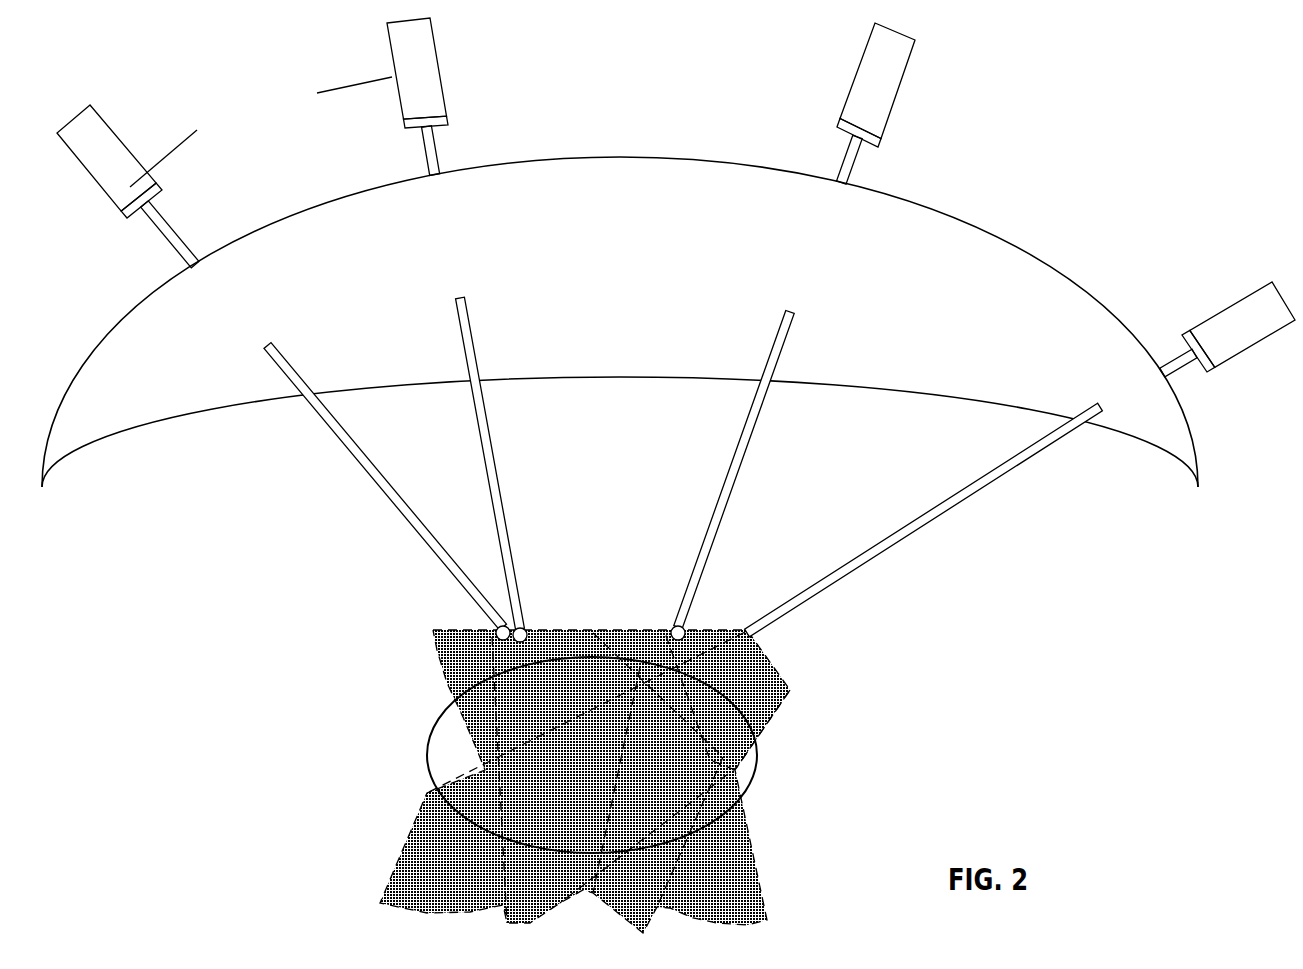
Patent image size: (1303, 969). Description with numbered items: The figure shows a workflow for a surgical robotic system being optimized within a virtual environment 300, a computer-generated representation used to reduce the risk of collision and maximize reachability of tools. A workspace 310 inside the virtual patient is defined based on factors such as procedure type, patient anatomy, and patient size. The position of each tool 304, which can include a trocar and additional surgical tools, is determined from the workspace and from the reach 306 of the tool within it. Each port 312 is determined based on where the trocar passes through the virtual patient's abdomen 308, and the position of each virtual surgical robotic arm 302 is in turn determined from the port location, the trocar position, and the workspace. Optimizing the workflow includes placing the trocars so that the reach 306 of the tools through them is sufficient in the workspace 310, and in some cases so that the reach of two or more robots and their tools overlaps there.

The virtual environment 300 is at (1119, 127).
The virtual surgical robotic arm 302 is at (448, 100).
The tool 304 is at (503, 503).
The reach 306 is at (405, 848).
The virtual patient's abdomen 308 is at (620, 322).
The workspace 310 is at (757, 775).
The port 312 is at (463, 297).